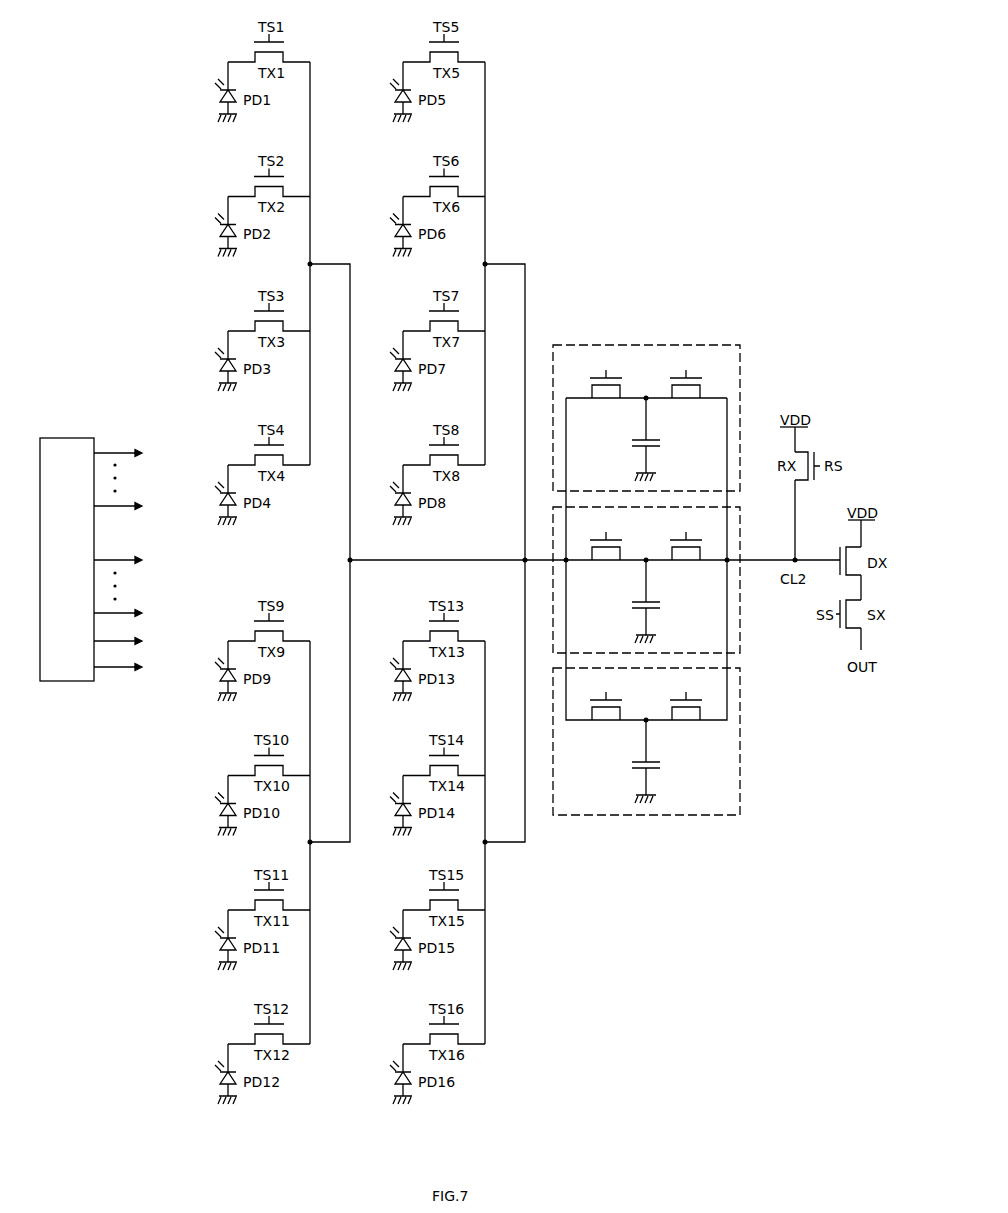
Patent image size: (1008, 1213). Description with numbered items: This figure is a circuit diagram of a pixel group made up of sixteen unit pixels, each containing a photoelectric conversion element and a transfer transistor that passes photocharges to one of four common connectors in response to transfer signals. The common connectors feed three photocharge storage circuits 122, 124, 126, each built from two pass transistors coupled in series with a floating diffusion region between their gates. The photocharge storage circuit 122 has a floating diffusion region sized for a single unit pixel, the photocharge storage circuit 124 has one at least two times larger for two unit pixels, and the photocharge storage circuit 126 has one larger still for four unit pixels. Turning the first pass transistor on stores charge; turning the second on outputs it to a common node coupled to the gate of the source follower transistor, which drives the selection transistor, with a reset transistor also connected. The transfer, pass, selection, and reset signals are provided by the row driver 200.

The row driver 200 is at (79, 568).
The photocharge storage circuit 122 is at (740, 371).
The photocharge storage circuit 124 is at (740, 633).
The photocharge storage circuit 126 is at (740, 738).